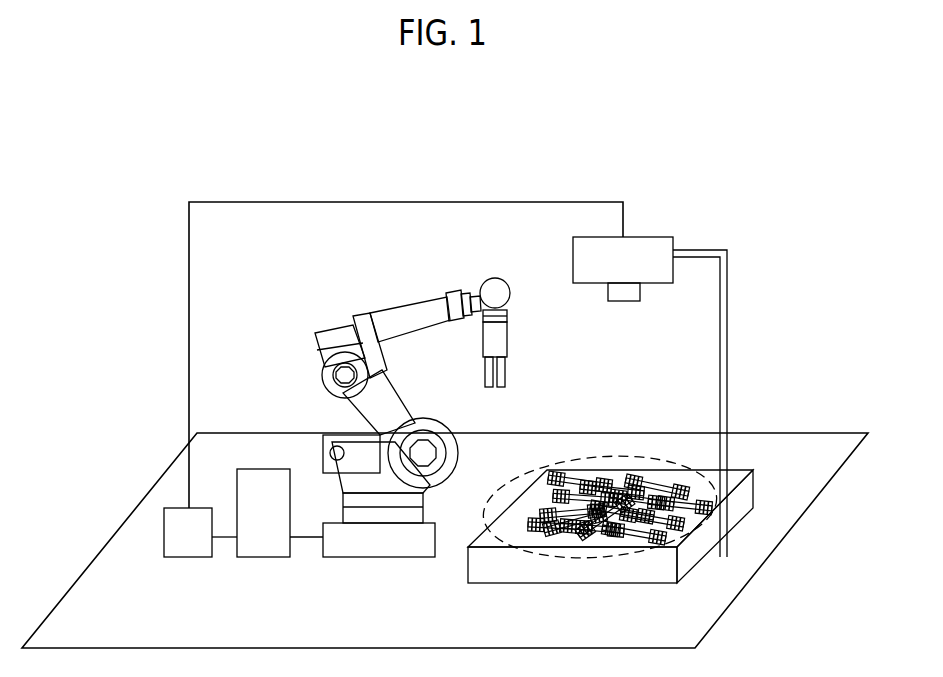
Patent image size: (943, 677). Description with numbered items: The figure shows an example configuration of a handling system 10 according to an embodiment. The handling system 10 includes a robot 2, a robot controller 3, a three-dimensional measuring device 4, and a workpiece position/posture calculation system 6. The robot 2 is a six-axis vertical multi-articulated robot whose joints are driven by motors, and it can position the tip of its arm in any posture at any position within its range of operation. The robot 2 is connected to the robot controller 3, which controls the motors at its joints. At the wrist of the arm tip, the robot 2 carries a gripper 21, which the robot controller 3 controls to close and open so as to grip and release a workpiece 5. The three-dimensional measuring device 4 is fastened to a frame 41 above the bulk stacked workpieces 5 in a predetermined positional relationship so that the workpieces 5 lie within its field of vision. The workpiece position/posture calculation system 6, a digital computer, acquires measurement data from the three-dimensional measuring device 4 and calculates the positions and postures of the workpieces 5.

The handling system 10 is at (172, 165).
The robot 2 is at (400, 310).
The gripper 21 is at (498, 343).
The robot controller 3 is at (262, 490).
The workpiece position/posture calculation system 6 is at (182, 525).
The 3D measuring device 4 is at (642, 237).
The frame 41 is at (713, 252).
The workpiece 5 is at (640, 457).